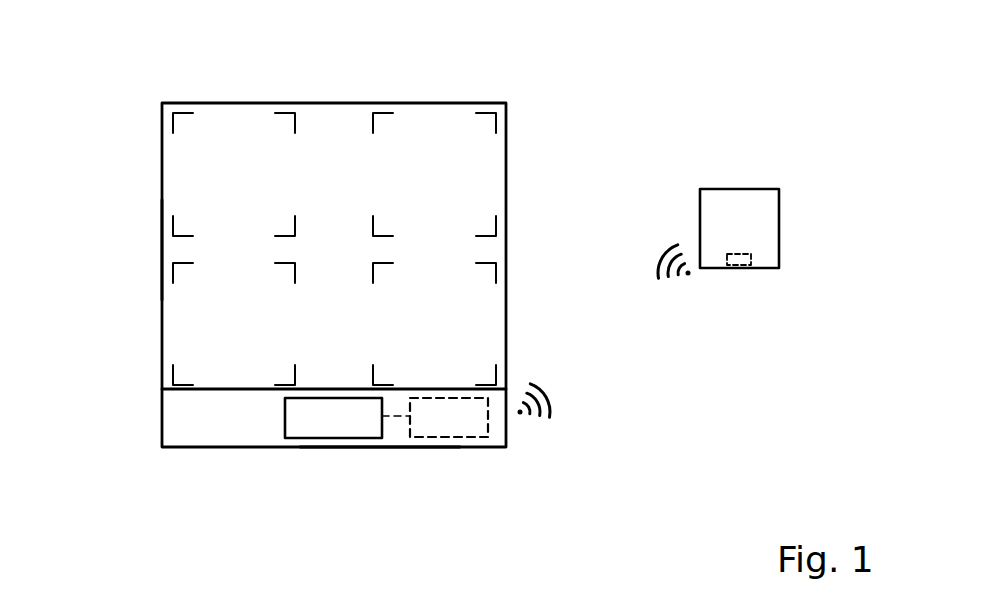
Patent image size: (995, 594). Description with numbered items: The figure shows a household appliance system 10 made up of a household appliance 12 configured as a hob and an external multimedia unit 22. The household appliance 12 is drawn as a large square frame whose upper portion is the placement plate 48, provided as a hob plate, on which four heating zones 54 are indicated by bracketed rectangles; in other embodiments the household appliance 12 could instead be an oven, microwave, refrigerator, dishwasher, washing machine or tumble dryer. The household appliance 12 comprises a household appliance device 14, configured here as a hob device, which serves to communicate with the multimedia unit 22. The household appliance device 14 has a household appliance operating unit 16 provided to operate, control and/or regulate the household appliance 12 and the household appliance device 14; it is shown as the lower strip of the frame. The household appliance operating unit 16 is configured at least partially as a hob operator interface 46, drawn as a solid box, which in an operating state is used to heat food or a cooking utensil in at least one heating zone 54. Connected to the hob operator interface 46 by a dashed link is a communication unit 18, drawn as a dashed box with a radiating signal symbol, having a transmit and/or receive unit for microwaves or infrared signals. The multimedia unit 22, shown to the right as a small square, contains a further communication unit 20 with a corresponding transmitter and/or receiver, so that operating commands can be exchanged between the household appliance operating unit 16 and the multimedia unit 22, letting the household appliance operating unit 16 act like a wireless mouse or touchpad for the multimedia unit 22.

The household appliance system 10 is at (600, 138).
The household appliance 12 is at (483, 91).
The household appliance device 14 is at (318, 449).
The household appliance operating unit 16 is at (379, 453).
The communication unit 18 is at (488, 422).
The further communication unit 20 is at (738, 266).
The multimedia unit 22 is at (739, 218).
The hob operator interface 46 is at (285, 417).
The placement plate 48 is at (162, 247).
The heating zone 54 is at (195, 169).